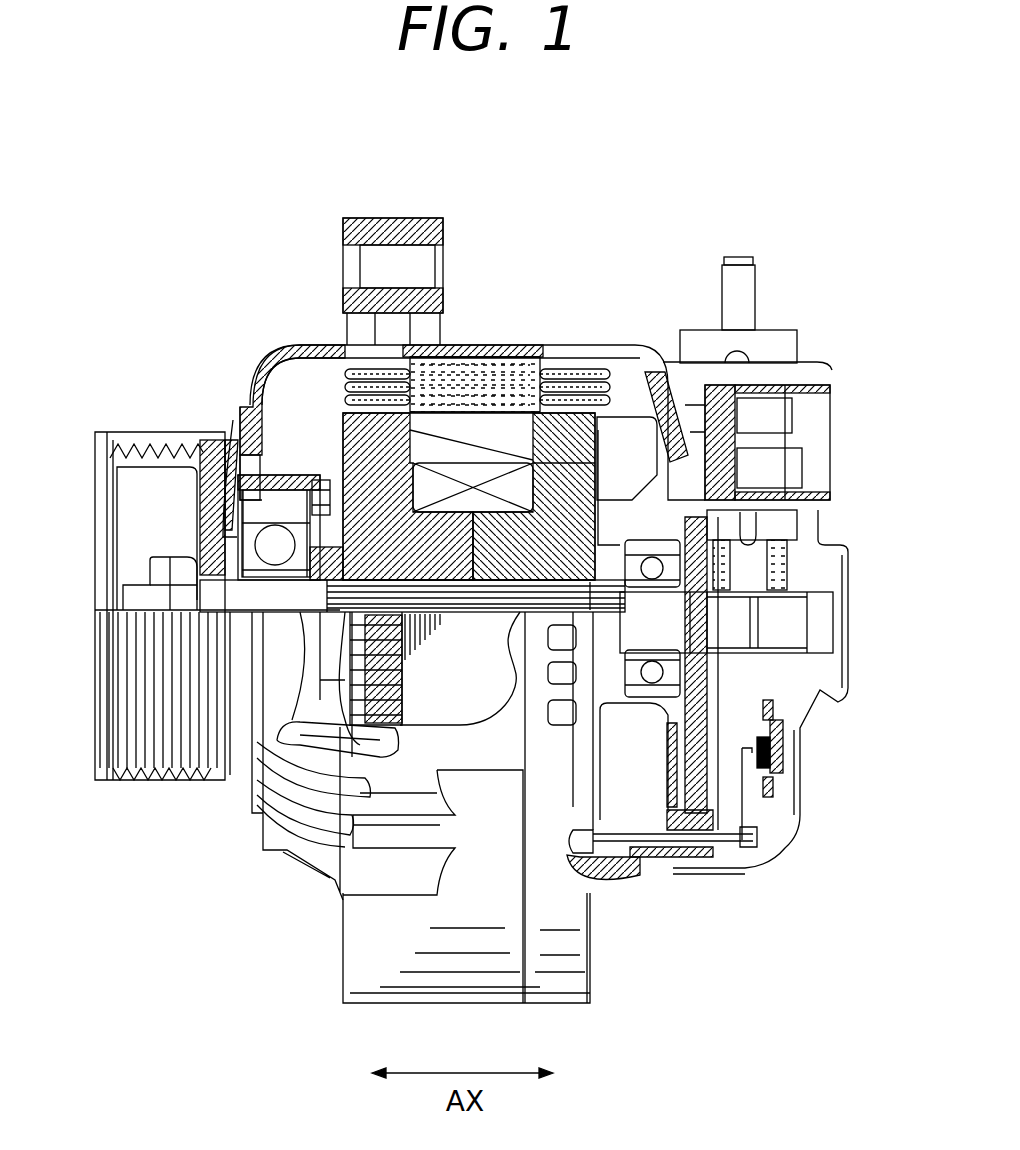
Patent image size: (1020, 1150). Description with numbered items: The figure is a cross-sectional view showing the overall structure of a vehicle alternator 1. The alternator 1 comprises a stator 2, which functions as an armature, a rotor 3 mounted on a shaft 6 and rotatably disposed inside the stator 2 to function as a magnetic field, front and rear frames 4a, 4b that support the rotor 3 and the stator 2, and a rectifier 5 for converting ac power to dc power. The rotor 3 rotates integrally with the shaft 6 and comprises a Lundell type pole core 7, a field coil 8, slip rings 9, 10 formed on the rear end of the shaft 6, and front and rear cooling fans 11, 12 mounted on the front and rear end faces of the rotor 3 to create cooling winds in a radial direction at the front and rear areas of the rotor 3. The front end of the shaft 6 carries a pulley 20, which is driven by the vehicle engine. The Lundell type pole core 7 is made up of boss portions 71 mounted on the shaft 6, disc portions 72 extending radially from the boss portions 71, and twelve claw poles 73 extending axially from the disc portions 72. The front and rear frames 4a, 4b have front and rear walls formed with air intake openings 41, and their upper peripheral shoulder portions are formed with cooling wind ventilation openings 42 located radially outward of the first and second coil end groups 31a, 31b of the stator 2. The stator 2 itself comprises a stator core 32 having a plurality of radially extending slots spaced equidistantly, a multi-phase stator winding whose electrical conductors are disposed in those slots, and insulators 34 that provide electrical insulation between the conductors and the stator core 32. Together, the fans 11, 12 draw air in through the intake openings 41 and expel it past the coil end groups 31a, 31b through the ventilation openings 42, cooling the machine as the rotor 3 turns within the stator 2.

The vehicle alternator 1 is at (668, 140).
The stator 2 is at (575, 447).
The rotor 3 is at (267, 373).
The front frame 4a is at (390, 992).
The rear frame 4b is at (552, 993).
The rectifier 5 is at (790, 787).
The shaft 6 is at (238, 650).
The Lundell type pole core 7 is at (355, 422).
The field coil 8 is at (500, 405).
The slip ring 9 is at (733, 633).
The slip ring 10 is at (780, 608).
The front cooling fan 11 is at (250, 450).
The rear cooling fan 12 is at (740, 455).
The pulley 20 is at (172, 441).
The first coil end group 31a is at (585, 380).
The second coil end group 31b is at (365, 395).
The stator core 32 is at (455, 435).
The insulator 34 is at (560, 445).
The air intake opening 41 is at (255, 480).
The cooling wind ventilation opening 42 is at (316, 404).
The boss portion 71 is at (617, 577).
The disc portion 72 is at (205, 503).
The claw pole 73 is at (470, 468).